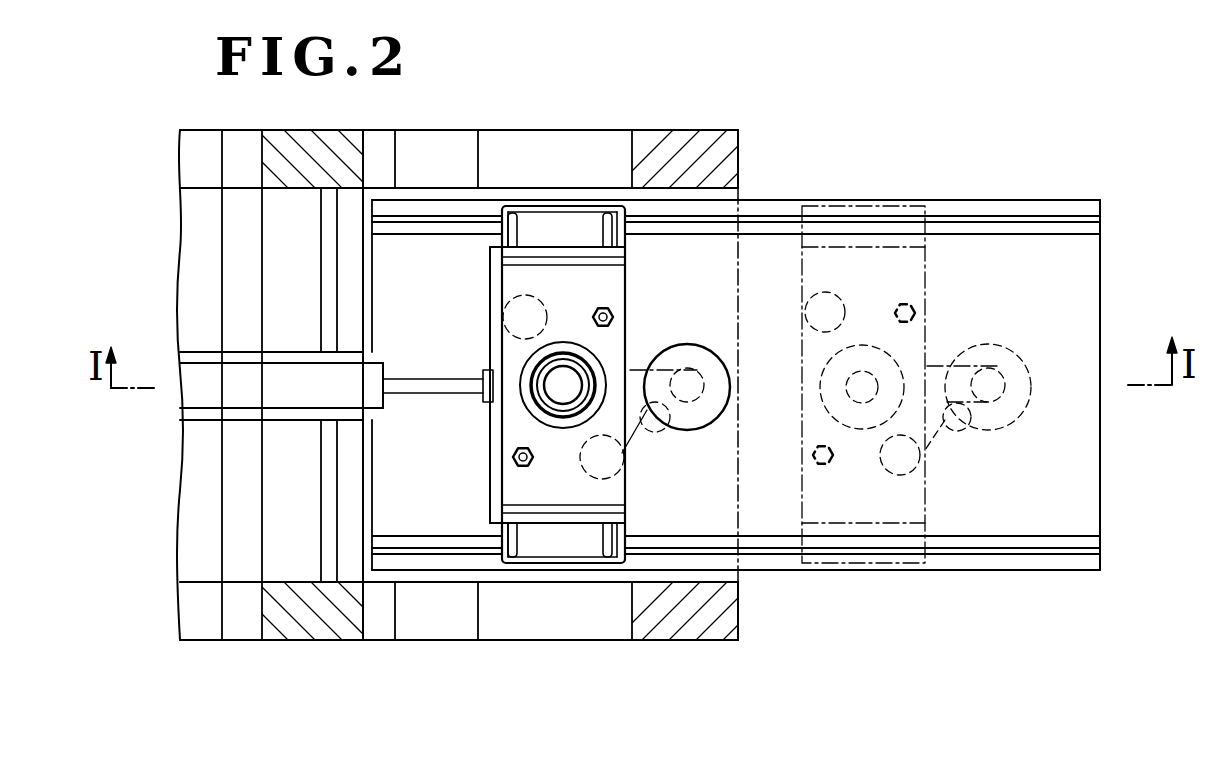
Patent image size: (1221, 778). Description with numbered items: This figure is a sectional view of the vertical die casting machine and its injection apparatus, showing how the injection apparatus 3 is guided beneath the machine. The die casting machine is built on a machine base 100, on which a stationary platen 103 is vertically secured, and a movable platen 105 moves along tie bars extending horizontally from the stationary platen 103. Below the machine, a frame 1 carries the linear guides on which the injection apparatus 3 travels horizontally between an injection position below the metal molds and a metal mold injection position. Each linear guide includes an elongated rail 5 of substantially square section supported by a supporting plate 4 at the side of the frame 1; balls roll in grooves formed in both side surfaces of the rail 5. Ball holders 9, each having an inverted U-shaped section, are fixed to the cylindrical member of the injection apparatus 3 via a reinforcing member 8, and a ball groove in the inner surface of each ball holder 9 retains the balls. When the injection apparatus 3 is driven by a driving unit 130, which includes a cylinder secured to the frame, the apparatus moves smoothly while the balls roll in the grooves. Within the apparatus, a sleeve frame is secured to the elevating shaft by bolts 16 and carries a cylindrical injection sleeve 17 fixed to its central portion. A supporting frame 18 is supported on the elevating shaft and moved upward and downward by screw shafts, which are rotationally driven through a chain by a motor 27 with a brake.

The frame 1 is at (947, 200).
The injection apparatus 3 is at (500, 497).
The supporting plate 4 is at (1033, 228).
The rail 5 is at (987, 214).
The reinforcing member 8 is at (513, 216).
The ball holder 9 is at (556, 218).
The bolt 16 is at (612, 313).
The injection sleeve 17 is at (533, 387).
The supporting frame 18 is at (517, 302).
The motor 27 is at (698, 428).
The machine base 100 is at (490, 630).
The stationary platen 103 is at (743, 267).
The movable platen 105 is at (267, 162).
The driving unit 130 is at (384, 372).